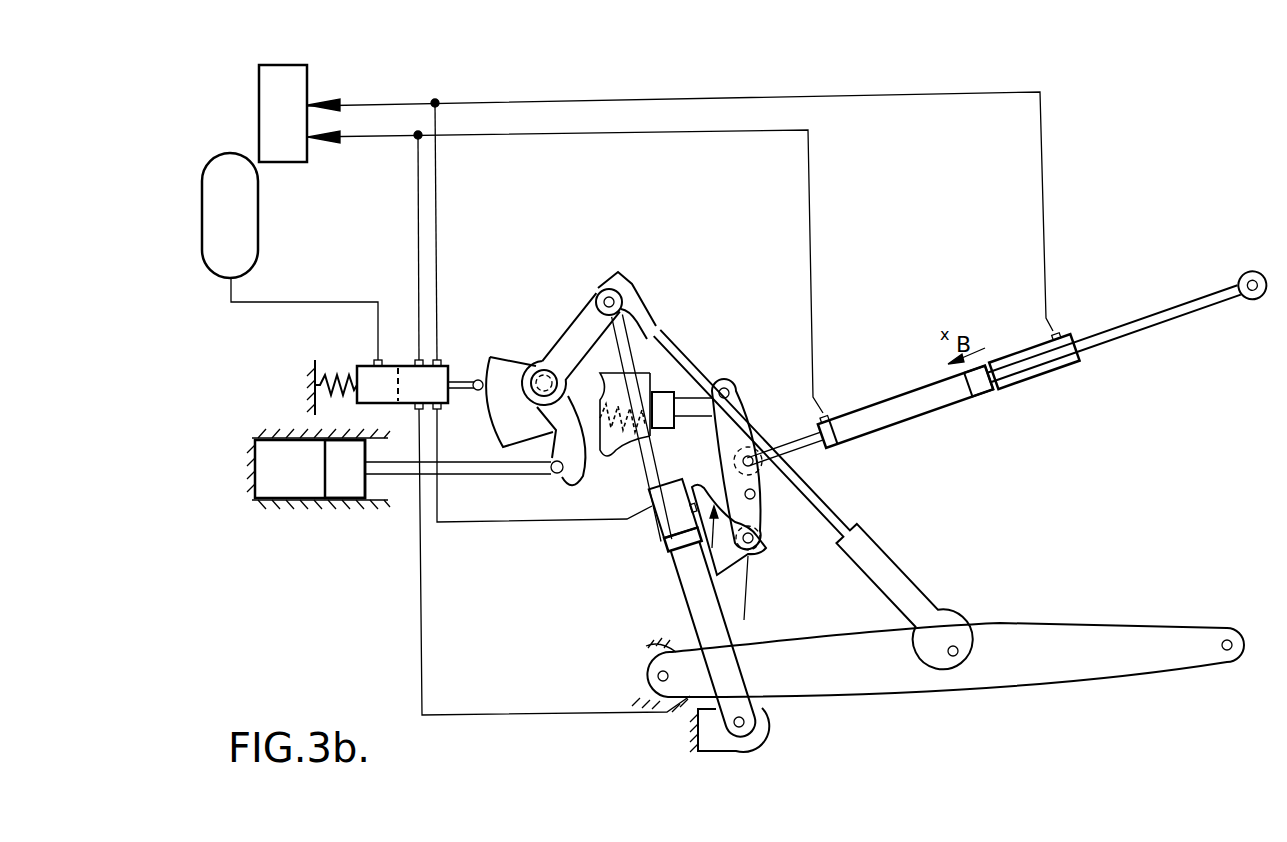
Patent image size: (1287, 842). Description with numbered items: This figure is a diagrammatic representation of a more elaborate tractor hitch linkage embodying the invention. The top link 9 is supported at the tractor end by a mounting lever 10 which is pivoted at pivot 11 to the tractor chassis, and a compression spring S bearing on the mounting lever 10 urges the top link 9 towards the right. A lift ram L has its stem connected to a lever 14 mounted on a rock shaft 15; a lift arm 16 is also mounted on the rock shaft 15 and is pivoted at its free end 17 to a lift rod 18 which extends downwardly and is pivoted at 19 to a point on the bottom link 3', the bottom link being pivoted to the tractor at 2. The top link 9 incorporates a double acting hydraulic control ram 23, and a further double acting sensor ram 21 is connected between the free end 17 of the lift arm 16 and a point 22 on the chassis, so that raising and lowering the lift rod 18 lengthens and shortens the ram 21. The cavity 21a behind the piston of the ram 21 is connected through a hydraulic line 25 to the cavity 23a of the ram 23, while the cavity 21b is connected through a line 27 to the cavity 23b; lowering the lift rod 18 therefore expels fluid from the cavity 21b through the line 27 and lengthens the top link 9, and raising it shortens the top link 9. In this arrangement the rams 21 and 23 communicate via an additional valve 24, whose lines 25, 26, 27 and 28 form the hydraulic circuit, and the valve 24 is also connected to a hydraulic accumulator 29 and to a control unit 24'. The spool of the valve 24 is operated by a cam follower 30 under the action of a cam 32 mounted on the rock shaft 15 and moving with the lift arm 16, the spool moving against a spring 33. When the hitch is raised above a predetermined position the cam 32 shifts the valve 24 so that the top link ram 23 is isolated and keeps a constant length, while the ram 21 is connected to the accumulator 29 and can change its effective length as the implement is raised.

The control unit 24' is at (318, 105).
The hydraulic accumulator 29 is at (258, 216).
The spring 33 is at (330, 382).
The additional valve 24 is at (418, 363).
The cam follower 30 is at (478, 380).
The rock shaft 15 is at (539, 372).
The lift arm 16 is at (566, 334).
The free end of lift arm 17 is at (626, 282).
The compression spring S is at (612, 398).
The cam 32 is at (489, 424).
The lift ram L is at (292, 484).
The lever 14 is at (572, 468).
The hydraulic line 25 is at (530, 520).
The hydraulic line 26 is at (812, 243).
The hydraulic line 27 is at (420, 603).
The hydraulic line 28 is at (1046, 243).
The mounting lever 10 is at (740, 398).
The pivot 11 is at (753, 540).
The hydraulic control ram 23 is at (958, 406).
The cavity of ram 23 23a is at (1019, 352).
The cavity of ram 23 23b is at (884, 394).
The top link 9 is at (1060, 372).
The lift rod 18 is at (825, 500).
The pivot 19 is at (958, 649).
The bottom link 3' is at (945, 676).
The pedal pivot 2 is at (657, 677).
The hydraulic sensor ram 21 is at (672, 562).
The cavity of ram 21 21a is at (653, 516).
The cavity of ram 21 21b is at (686, 614).
The point on tractor chassis 22 is at (745, 728).